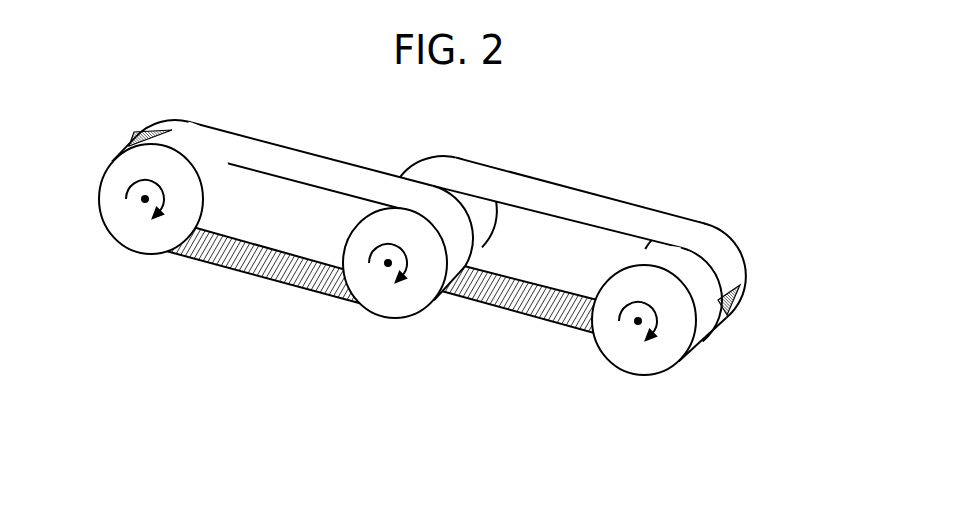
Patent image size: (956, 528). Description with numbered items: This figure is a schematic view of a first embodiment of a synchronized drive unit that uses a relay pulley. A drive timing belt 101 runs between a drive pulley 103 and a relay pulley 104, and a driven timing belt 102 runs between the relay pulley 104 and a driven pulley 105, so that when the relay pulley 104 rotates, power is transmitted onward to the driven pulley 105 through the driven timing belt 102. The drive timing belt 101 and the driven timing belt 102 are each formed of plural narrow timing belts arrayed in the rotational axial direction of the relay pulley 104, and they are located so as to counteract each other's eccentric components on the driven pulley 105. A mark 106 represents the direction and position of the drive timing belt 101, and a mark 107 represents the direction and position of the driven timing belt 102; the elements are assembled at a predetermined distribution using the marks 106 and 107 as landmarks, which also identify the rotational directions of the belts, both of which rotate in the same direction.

The drive timing belt 101 is at (298, 156).
The driven timing belt 102 is at (585, 196).
The drive pulley 103 is at (136, 248).
The relay pulley 104 is at (384, 312).
The driven pulley 105 is at (629, 366).
The mark 106 is at (145, 134).
The mark 107 is at (733, 299).